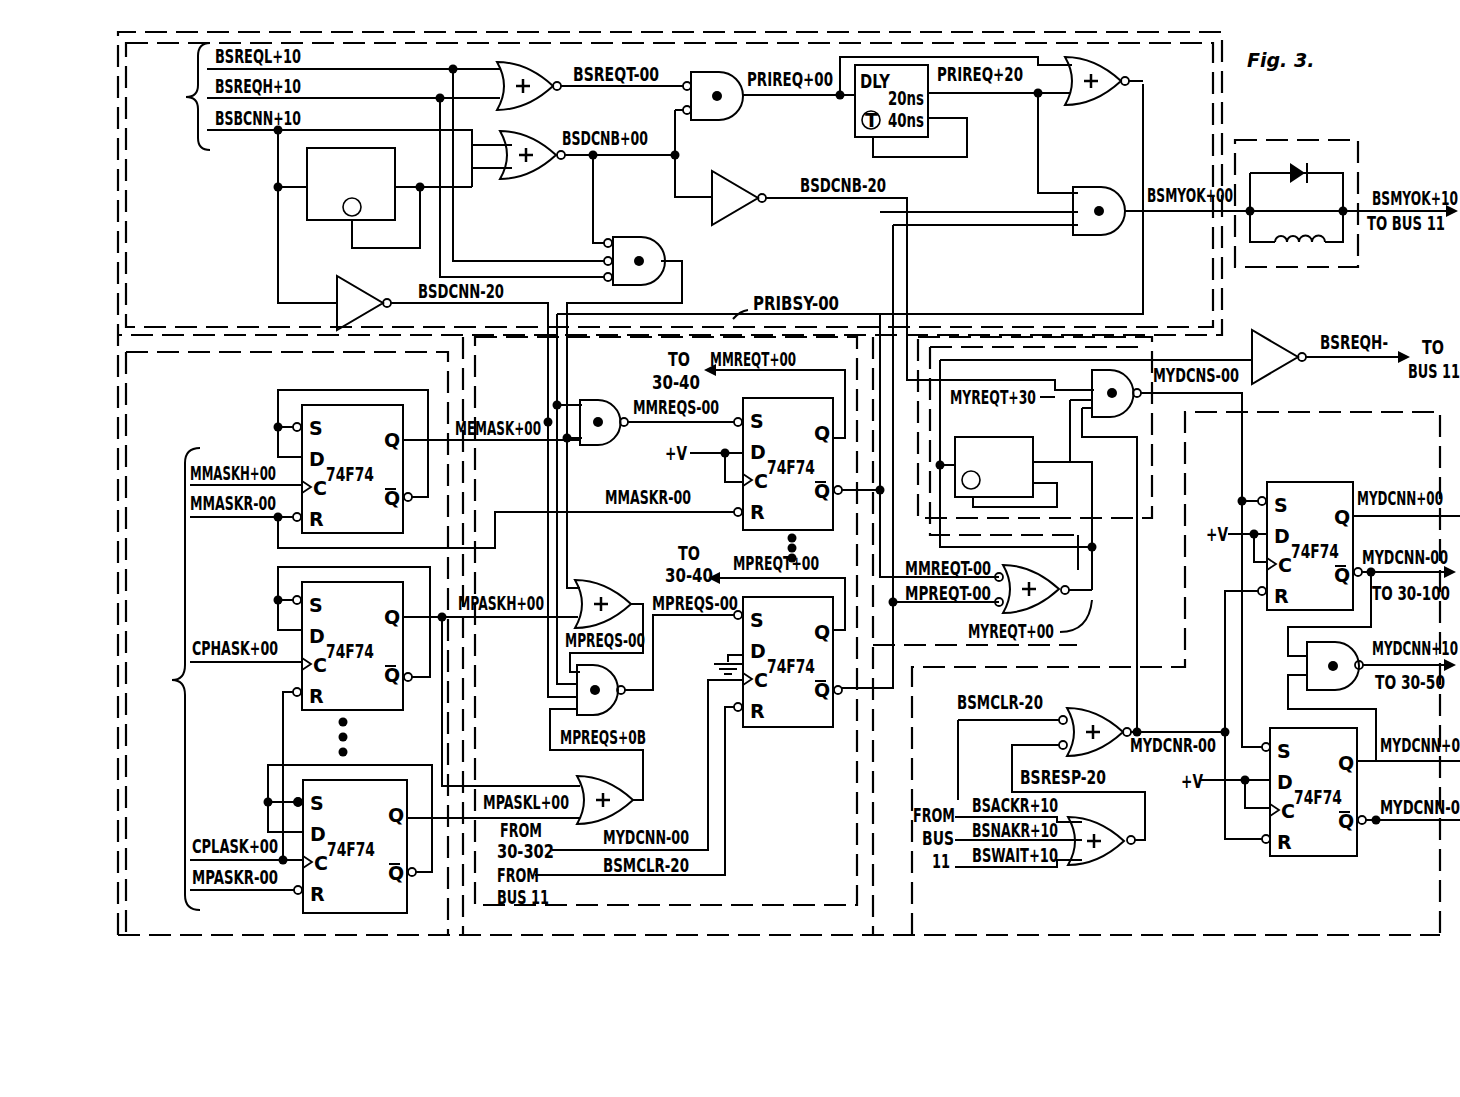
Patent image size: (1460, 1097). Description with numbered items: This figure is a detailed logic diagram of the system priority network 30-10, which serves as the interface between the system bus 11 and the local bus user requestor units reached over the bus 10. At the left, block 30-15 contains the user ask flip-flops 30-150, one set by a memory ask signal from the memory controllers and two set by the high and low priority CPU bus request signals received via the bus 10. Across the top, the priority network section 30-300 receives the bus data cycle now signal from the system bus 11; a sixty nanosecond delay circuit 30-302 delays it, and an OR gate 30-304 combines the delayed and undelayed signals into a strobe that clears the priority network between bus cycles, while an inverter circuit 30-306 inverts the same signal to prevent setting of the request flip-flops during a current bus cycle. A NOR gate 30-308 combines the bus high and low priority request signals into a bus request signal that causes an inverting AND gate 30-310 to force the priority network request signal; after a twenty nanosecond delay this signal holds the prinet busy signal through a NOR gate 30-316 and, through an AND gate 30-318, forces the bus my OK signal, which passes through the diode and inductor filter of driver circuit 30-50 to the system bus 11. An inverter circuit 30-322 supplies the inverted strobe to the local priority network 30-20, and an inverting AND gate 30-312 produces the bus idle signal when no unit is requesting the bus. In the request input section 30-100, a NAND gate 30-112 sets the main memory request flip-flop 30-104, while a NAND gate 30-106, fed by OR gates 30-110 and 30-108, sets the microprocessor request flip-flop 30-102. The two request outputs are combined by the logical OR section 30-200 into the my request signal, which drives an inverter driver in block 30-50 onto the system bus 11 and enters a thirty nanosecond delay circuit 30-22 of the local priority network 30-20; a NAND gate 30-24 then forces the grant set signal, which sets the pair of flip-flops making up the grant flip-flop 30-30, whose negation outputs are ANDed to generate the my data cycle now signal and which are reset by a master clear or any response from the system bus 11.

The priority network section 30-300 is at (1030, 286).
The sixty nanosecond delay circuit 30-302 is at (307, 166).
The OR gate 30-304 is at (545, 181).
The inverter circuit 30-306 is at (366, 296).
The NOR gate 30-308 is at (548, 100).
The inverting AND gate 30-310 is at (722, 121).
The inverting AND gate 30-312 is at (643, 236).
The NOR gate 30-316 is at (1105, 64).
The AND gate 30-318 is at (1100, 187).
The inverter circuit 30-322 is at (748, 184).
The driver circuit 30-50 is at (1300, 140).
The user ask flip-flop block 30-15 is at (193, 381).
The user flip-flop 30-150 is at (345, 405).
The system priority network 30-10 is at (748, 929).
The request input section 30-100 is at (820, 888).
The microprocessor request flip-flop 30-102 is at (785, 727).
The main memory request flip-flop 30-104 is at (770, 398).
The NAND gate 30-106 is at (628, 708).
The OR gate 30-108 is at (622, 790).
The OR gate 30-110 is at (598, 580).
The NAND gate 30-112 is at (616, 424).
The local priority network 30-20 is at (1145, 489).
The thirty nanosecond local priority resolver delay circuit 30-22 is at (1003, 437).
The NAND gate 30-24 is at (1125, 418).
The logical OR section 30-200 is at (1050, 574).
The grant flip-flop 30-30 is at (1418, 909).
The system bus 11 is at (166, 96).
The bus 10 is at (164, 679).